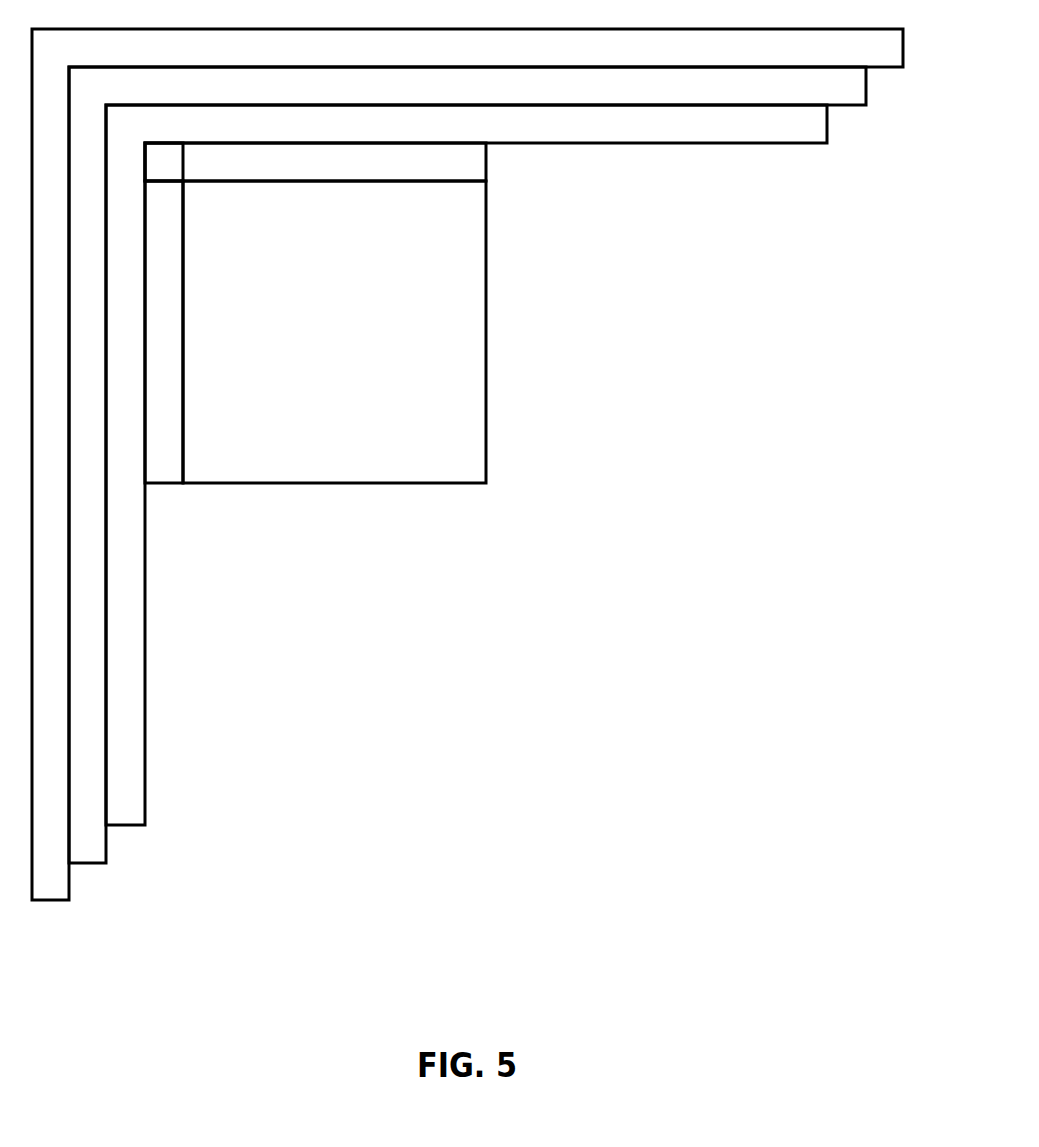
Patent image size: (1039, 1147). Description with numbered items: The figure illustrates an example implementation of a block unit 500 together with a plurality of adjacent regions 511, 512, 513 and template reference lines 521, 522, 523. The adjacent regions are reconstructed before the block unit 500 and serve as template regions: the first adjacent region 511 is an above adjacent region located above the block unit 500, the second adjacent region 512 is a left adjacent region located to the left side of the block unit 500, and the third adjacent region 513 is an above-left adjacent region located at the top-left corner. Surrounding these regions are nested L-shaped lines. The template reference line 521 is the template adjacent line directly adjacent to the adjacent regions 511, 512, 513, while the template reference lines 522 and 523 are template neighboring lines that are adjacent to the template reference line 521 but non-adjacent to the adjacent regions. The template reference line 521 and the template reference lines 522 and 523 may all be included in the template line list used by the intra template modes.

The block unit 500 is at (334, 332).
The first adjacent region 511 is at (315, 162).
The second adjacent region 512 is at (163, 472).
The third adjacent region 513 is at (163, 163).
The template reference line 521 is at (466, 465).
The template reference line 522 is at (467, 465).
The template reference line 523 is at (467, 464).